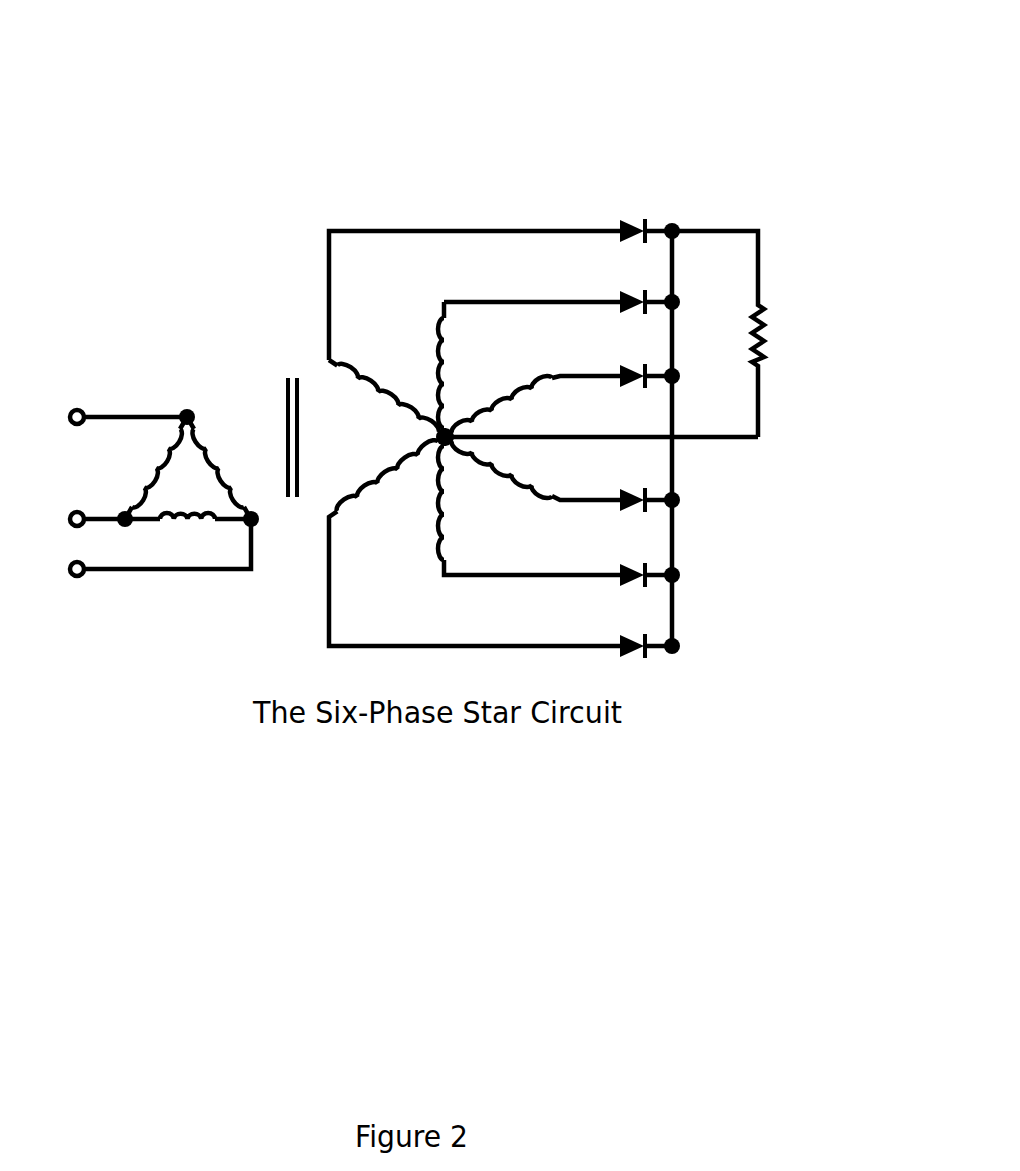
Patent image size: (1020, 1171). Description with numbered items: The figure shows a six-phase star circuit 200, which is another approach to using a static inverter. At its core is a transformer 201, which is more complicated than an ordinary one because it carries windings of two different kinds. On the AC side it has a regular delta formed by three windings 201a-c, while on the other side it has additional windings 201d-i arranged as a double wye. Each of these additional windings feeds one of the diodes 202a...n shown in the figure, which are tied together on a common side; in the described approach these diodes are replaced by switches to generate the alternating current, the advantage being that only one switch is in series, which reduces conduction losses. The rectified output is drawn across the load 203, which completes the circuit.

The six-phase star circuit 200 is at (740, 58).
The delta windings 201a-c is at (150, 412).
The transformer 201 is at (283, 389).
The additional windings 201d-i is at (322, 557).
The diodes 202a...n is at (688, 660).
The load resistor RL 203 is at (712, 432).